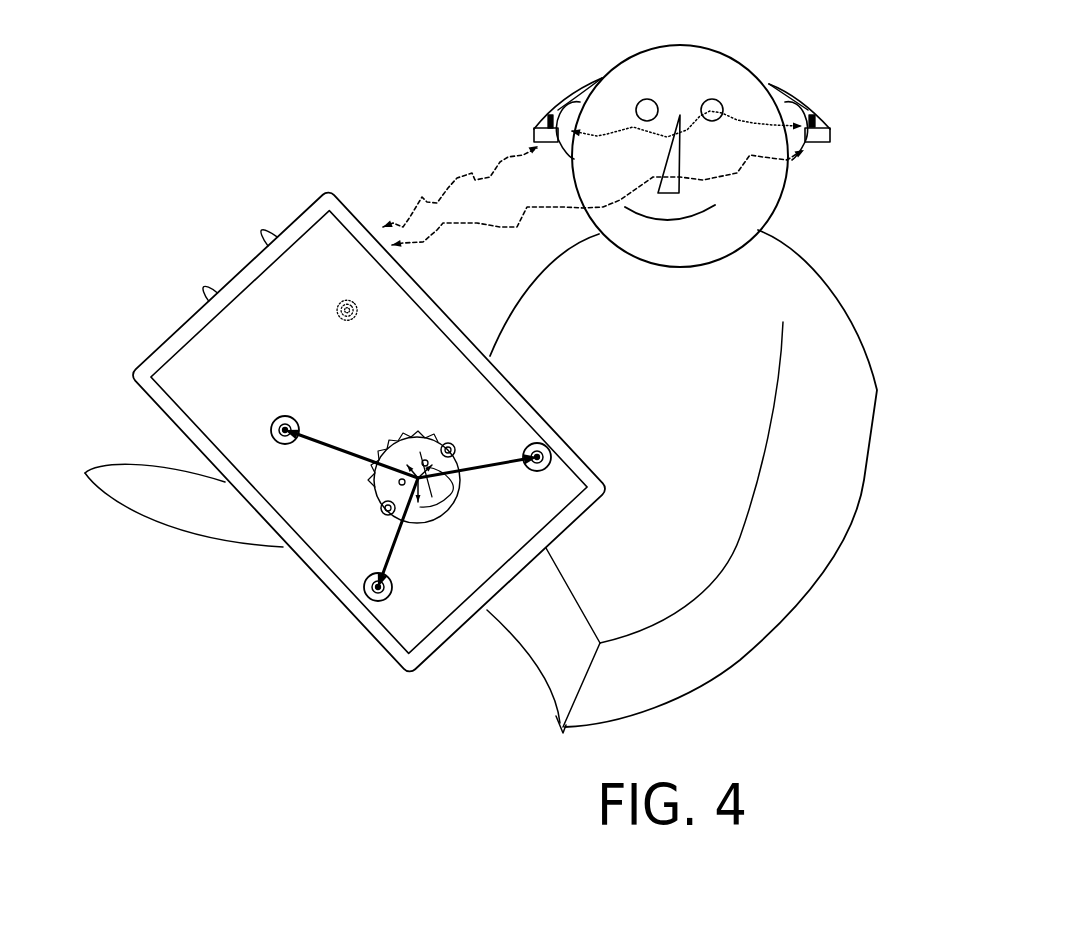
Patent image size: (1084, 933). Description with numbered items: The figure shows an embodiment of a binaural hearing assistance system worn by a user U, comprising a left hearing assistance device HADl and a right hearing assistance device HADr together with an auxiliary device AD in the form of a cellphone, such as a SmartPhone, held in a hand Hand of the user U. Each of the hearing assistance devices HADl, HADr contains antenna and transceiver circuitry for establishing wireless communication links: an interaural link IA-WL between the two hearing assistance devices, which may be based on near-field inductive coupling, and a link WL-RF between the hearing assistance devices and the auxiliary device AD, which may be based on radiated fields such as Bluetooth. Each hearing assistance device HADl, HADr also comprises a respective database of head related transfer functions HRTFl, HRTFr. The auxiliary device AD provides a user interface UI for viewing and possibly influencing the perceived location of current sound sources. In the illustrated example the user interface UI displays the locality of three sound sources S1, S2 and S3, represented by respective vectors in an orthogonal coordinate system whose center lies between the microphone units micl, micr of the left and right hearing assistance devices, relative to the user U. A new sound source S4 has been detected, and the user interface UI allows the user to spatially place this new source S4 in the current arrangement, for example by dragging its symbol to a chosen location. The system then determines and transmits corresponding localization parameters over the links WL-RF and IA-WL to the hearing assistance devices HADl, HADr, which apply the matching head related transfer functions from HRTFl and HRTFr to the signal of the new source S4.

The user U is at (749, 62).
The right hearing assistance device HADr is at (575, 84).
The left hearing assistance device HADl is at (803, 92).
The right database of head related transfer functions HRTFr is at (552, 124).
The left database of head related transfer functions HRTFl is at (806, 122).
The interaural wireless link IA-WL is at (611, 128).
The wireless link between auxiliary device and hearing assistance devices WL-RF is at (500, 226).
The hand Hand is at (177, 495).
The auxiliary device AD is at (328, 594).
The user interface UI is at (374, 485).
The sound source S1 is at (398, 561).
The sound source S2 is at (500, 478).
The sound source S3 is at (344, 430).
The new sound source S4 is at (347, 310).
The microphone unit of the right hearing assistance device micr is at (388, 508).
The microphone unit of the left hearing assistance device micl is at (448, 450).